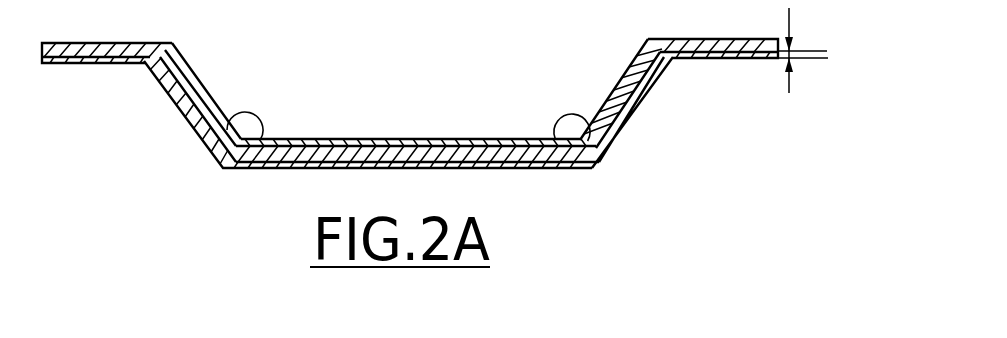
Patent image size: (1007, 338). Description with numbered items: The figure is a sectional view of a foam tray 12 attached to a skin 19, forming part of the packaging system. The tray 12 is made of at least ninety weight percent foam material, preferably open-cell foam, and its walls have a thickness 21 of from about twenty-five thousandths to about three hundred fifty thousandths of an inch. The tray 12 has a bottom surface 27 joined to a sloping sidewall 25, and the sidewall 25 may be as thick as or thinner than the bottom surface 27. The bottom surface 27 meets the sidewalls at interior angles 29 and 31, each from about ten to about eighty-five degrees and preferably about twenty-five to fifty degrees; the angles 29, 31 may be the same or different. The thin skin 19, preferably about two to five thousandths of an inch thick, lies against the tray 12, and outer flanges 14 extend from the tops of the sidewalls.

The tray 12 is at (560, 168).
The flange 14 is at (80, 63).
The skin layer 19 is at (308, 134).
The thickness 21 is at (827, 58).
The sidewall 25 is at (185, 122).
The bottom surface 27 is at (243, 168).
The interior angle 29 is at (571, 128).
The interior angle 31 is at (256, 134).